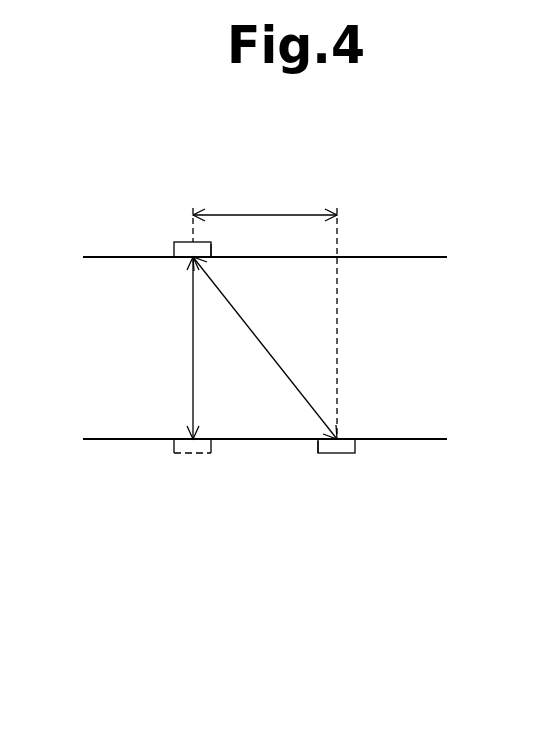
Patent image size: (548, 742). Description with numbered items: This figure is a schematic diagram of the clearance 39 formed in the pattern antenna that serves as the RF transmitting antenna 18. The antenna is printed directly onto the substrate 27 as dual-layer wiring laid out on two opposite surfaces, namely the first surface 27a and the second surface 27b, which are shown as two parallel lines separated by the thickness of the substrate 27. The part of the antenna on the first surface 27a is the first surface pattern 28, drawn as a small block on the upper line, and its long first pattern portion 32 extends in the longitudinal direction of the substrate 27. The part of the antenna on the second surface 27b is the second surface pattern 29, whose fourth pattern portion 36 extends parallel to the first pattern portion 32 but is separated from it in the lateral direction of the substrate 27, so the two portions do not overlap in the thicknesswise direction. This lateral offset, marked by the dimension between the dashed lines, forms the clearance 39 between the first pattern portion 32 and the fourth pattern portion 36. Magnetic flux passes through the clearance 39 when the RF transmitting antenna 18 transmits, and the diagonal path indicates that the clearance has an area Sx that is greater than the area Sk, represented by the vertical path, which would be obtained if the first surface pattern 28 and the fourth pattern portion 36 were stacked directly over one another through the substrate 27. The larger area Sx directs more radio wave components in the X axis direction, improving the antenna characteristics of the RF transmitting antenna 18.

The RF transmitting antenna 18 is at (155, 158).
The substrate 27 is at (415, 432).
The first surface 27a is at (400, 257).
The second surface 27b is at (120, 440).
The first surface pattern 28 is at (187, 241).
The second surface pattern 29 is at (190, 455).
The first pattern portion 32 is at (208, 250).
The fourth pattern portion 36 is at (330, 453).
The clearance 39 is at (268, 212).
The area Sk is at (192, 347).
The area Sx is at (247, 320).